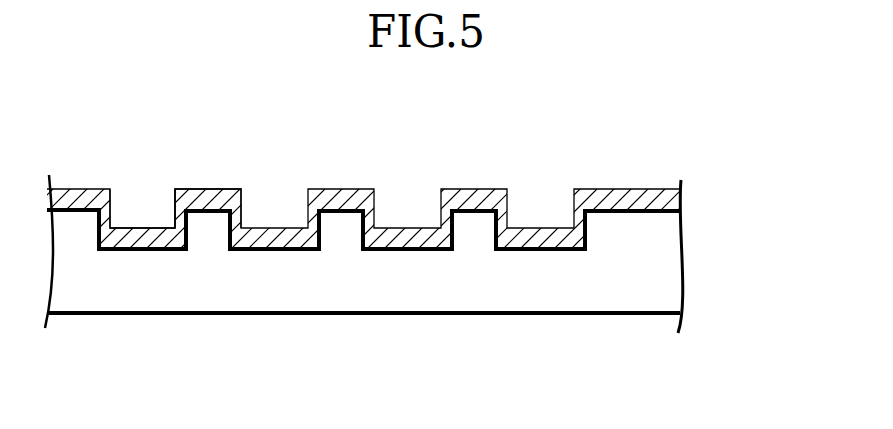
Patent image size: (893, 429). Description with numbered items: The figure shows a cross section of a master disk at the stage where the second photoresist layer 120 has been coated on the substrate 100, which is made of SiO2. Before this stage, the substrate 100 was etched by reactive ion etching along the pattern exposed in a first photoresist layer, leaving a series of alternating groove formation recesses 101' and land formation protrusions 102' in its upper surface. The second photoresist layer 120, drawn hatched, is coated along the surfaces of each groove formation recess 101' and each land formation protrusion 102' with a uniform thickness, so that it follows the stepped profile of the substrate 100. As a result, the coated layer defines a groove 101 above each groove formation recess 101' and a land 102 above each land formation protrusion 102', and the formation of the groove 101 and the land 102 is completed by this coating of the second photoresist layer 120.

The substrate 100 is at (683, 285).
The second photoresist layer 120 is at (679, 210).
The groove 101 is at (142, 183).
The land 102 is at (208, 183).
The groove formation recess 101' is at (142, 309).
The land formation protrusion 102' is at (79, 309).